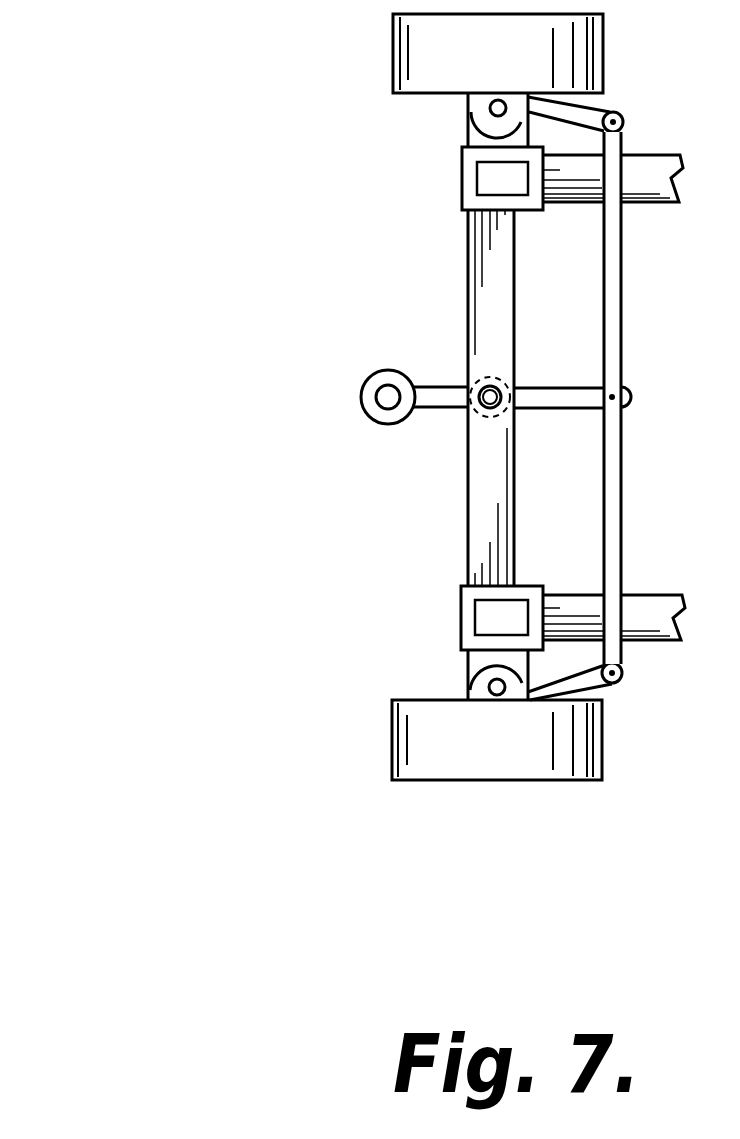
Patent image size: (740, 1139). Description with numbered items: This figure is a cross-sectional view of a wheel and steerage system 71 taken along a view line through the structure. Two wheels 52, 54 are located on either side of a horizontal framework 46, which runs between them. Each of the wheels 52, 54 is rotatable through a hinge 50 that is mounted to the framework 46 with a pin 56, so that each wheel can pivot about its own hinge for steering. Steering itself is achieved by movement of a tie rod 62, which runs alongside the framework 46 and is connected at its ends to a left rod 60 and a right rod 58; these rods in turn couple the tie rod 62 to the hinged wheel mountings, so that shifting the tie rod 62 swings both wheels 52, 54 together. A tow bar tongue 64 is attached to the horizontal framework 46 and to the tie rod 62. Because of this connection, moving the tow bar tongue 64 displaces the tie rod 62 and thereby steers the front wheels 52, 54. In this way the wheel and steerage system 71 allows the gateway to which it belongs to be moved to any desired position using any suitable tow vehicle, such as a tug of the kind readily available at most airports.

The lift assembly 71 is at (124, 377).
The wheel 52 is at (397, 63).
The wheel 54 is at (602, 748).
The hinge 50 is at (468, 103).
The pin 56 is at (490, 109).
The left rod 60 is at (592, 110).
The right rod 58 is at (590, 694).
The tie rod 62 is at (621, 293).
The tow bar tongue 64 is at (366, 410).
The horizontal framework 46 is at (468, 472).